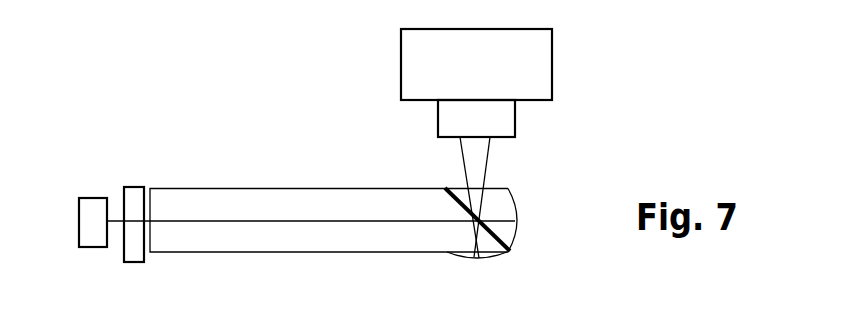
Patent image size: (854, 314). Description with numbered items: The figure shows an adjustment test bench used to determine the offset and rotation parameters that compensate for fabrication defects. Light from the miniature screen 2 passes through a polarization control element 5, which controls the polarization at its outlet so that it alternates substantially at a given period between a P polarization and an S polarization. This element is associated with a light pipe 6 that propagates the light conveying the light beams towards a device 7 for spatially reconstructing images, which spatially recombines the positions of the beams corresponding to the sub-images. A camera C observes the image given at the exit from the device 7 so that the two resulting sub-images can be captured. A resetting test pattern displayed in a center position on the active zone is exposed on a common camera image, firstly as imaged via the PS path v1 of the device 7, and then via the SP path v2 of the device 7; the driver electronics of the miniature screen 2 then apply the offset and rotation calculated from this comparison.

The miniature screen 2 is at (90, 194).
The polarization control element 5 is at (139, 181).
The light pipe 6 is at (270, 188).
The device for spatially reconstructing images 7 is at (523, 238).
The camera C is at (476, 83).
The PS path v1 is at (487, 168).
The SP path v2 is at (462, 167).